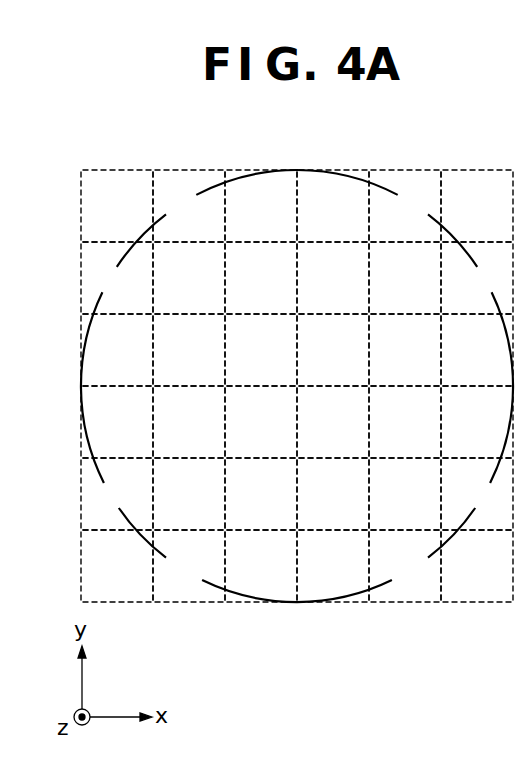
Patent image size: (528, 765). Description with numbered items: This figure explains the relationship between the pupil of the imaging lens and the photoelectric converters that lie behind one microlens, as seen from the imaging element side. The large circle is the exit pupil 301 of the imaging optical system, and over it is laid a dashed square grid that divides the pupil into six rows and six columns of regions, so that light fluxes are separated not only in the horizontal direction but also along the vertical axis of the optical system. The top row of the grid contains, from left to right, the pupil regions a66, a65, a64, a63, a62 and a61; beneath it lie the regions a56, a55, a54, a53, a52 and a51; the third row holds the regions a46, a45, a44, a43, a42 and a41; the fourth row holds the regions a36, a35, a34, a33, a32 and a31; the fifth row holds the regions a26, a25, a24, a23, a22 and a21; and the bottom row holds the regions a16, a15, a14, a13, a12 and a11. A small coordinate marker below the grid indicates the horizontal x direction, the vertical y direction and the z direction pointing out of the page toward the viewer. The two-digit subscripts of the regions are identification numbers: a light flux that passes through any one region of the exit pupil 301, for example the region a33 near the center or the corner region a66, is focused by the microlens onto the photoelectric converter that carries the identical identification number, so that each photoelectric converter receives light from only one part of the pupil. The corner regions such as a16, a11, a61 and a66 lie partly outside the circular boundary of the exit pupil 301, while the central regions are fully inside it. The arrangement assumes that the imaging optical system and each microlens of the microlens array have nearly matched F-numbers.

The exit pupil 301 is at (211, 186).
The pupil region a11 is at (477, 566).
The pupil region a12 is at (405, 566).
The pupil region a13 is at (333, 566).
The pupil region a14 is at (261, 566).
The pupil region a15 is at (189, 566).
The pupil region a16 is at (117, 566).
The pupil region a21 is at (477, 494).
The pupil region a22 is at (405, 494).
The pupil region a23 is at (333, 494).
The pupil region a24 is at (261, 494).
The pupil region a25 is at (189, 494).
The pupil region a26 is at (117, 494).
The pupil region a31 is at (477, 422).
The pupil region a32 is at (405, 422).
The pupil region a33 is at (333, 422).
The pupil region a34 is at (261, 422).
The pupil region a35 is at (189, 422).
The pupil region a36 is at (117, 422).
The pupil region a41 is at (477, 350).
The pupil region a42 is at (405, 350).
The pupil region a43 is at (333, 350).
The pupil region a44 is at (261, 350).
The pupil region a45 is at (189, 350).
The pupil region a46 is at (117, 350).
The pupil region a51 is at (477, 278).
The pupil region a52 is at (405, 278).
The pupil region a53 is at (333, 278).
The pupil region a54 is at (261, 278).
The pupil region a55 is at (189, 278).
The pupil region a56 is at (117, 278).
The pupil region a61 is at (477, 206).
The pupil region a62 is at (405, 206).
The pupil region a63 is at (333, 206).
The pupil region a64 is at (261, 206).
The pupil region a65 is at (189, 206).
The pupil region a66 is at (117, 206).